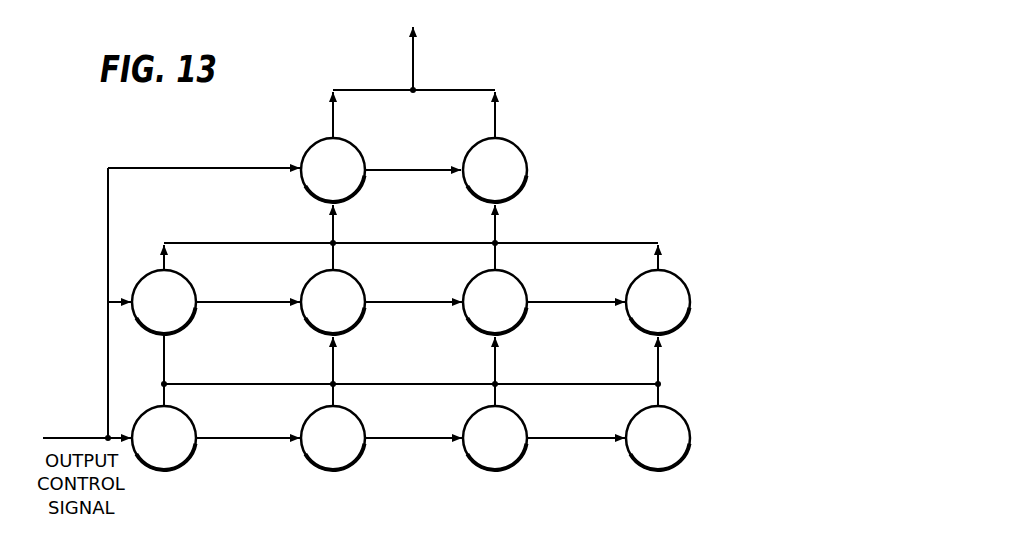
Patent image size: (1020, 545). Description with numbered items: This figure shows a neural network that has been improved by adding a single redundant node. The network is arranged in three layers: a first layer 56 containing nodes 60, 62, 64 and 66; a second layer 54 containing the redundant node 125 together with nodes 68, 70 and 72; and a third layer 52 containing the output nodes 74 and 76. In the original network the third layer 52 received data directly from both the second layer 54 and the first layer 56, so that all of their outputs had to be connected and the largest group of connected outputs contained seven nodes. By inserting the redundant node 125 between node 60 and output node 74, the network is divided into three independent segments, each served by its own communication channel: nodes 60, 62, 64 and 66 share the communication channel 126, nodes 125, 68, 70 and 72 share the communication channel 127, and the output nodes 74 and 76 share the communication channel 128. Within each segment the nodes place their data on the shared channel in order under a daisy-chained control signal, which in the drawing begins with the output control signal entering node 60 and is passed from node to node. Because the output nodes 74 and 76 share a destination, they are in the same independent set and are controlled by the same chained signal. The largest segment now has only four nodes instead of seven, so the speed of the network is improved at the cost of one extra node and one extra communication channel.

The third layer 52 is at (790, 178).
The second layer 54 is at (790, 303).
The first layer 56 is at (790, 433).
The node 60 is at (190, 464).
The node 62 is at (363, 463).
The node 64 is at (527, 463).
The node 66 is at (693, 458).
The node 68 is at (363, 322).
The node 70 is at (528, 322).
The node 72 is at (692, 302).
The output node 74 is at (307, 152).
The output node 76 is at (527, 177).
The redundant node 125 is at (189, 280).
The communication channel 126 is at (282, 384).
The communication channel 127 is at (235, 243).
The communication channel 128 is at (450, 90).